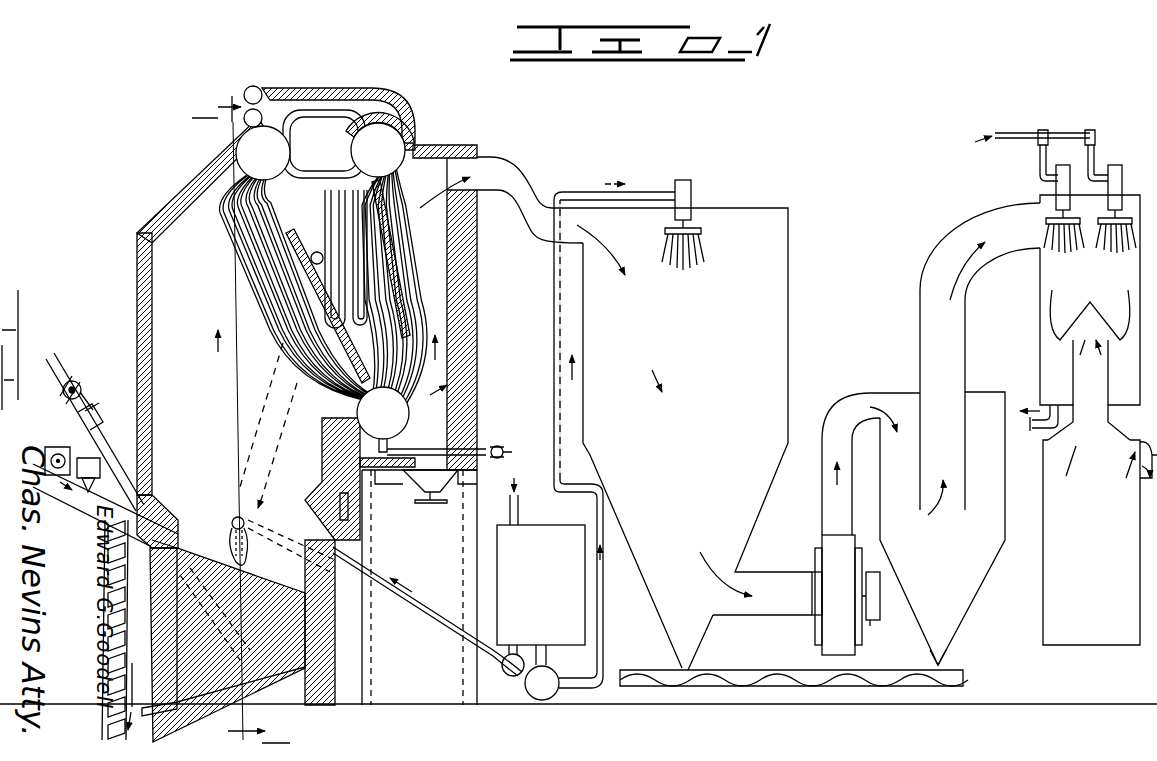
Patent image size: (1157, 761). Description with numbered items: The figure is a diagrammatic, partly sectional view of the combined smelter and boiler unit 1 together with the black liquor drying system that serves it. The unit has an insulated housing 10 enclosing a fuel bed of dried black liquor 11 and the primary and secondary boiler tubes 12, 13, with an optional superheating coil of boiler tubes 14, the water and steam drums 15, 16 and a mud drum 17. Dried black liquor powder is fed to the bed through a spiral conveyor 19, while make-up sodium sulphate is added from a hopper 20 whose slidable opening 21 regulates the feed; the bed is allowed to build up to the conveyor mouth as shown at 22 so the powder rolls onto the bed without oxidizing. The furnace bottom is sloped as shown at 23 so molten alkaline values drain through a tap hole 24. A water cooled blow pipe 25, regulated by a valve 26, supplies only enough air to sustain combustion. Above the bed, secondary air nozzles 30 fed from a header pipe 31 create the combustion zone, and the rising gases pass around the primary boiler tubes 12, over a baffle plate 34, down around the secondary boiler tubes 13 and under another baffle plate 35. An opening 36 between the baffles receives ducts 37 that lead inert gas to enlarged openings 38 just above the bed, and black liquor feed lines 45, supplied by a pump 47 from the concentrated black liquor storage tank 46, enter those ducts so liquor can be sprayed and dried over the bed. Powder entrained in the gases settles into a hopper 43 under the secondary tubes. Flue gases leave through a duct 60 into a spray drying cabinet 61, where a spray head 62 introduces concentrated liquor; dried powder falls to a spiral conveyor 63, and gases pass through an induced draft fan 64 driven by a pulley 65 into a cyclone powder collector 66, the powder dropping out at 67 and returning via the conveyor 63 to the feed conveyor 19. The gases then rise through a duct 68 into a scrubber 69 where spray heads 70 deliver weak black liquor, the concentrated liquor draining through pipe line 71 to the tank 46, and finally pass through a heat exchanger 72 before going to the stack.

The combined smelter and boiler unit 1 is at (136, 281).
The insulated housing 10 is at (168, 212).
The fuel bed of dried black liquor 11 is at (336, 662).
The primary boiler tubes 12 is at (238, 202).
The secondary boiler tubes 13 is at (414, 357).
The superheating coil of boiler tubes 14 is at (303, 143).
The water and steam drum 15 is at (263, 133).
The water and steam drum 16 is at (378, 150).
The mud drum 17 is at (383, 419).
The spiral conveyor 19 is at (43, 453).
The hopper 20 is at (100, 460).
The slidable opening 21 is at (100, 480).
The fuel bed build-up at conveyor mouth 22 is at (178, 545).
The sloped furnace bottom 23 is at (288, 680).
The tap hole 24 is at (152, 690).
The water cooled blow pipe 25 is at (78, 450).
The valve 26 is at (78, 382).
The secondary air nozzles 30 is at (340, 500).
The header pipe 31 is at (349, 512).
The baffle plate 34 is at (300, 247).
The baffle plate 35 is at (400, 258).
The opening 36 is at (322, 230).
The ducts 37 is at (274, 425).
The enlarged openings 38 is at (264, 544).
The hopper 43 is at (435, 503).
The black liquor feed lines 45 is at (433, 620).
The concentrated black liquor storage tank 46 is at (565, 641).
The pump 47 is at (543, 450).
The duct 60 is at (500, 180).
The spray drying cabinet 61 is at (746, 290).
The spray head 62 is at (686, 205).
The spiral conveyor 63 is at (56, 448).
The induced draft fan 64 is at (857, 656).
The pulley 65 is at (882, 619).
The powder collector 66 is at (967, 605).
The collector bottom 67 is at (943, 664).
The duct 68 is at (943, 257).
The scrubber 69 is at (1073, 285).
The spray heads 70 is at (1066, 189).
The pipe line 71 is at (1042, 421).
The heat exchanger 72 is at (1097, 627).